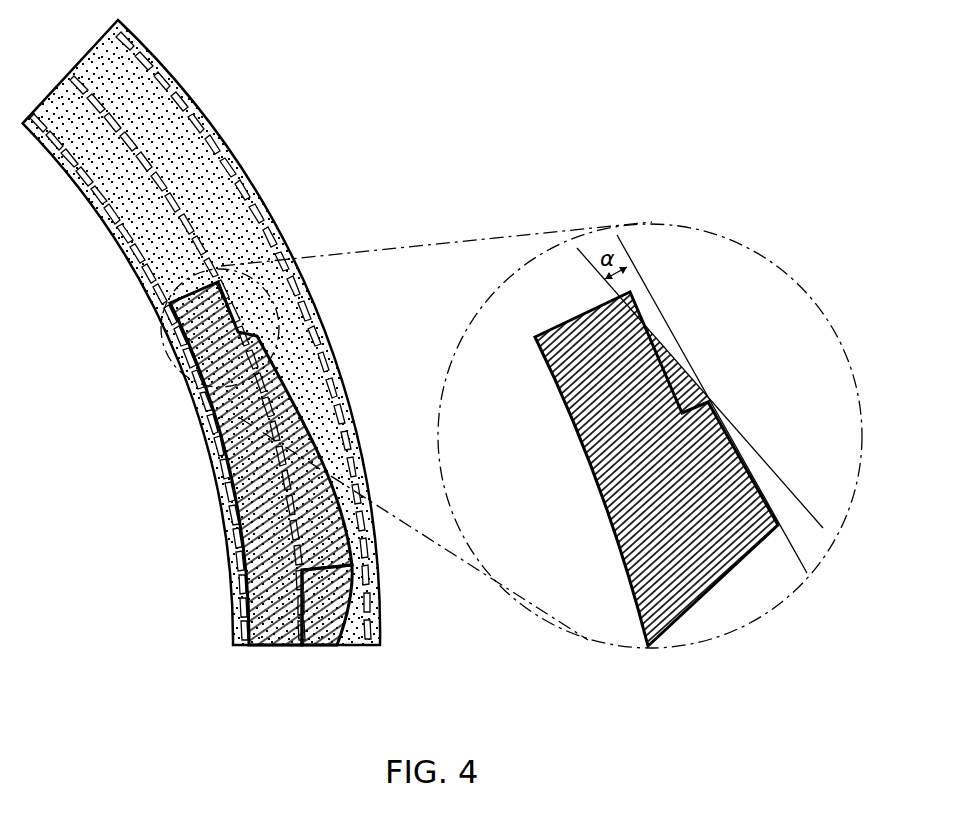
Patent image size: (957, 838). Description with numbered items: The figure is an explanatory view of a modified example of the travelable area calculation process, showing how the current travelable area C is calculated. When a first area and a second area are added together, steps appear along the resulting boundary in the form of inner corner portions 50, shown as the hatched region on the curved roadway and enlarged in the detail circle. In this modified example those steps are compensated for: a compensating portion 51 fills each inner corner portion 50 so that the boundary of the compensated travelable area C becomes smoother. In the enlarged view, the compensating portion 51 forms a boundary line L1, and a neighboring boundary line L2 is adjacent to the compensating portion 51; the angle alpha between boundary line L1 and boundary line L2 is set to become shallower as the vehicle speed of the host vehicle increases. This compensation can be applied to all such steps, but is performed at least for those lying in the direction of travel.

The inner corner portion 50 is at (300, 568).
The compensating portion 51 is at (243, 333).
The travelable area C is at (238, 602).
The boundary line L1 is at (822, 527).
The boundary line L2 is at (789, 543).